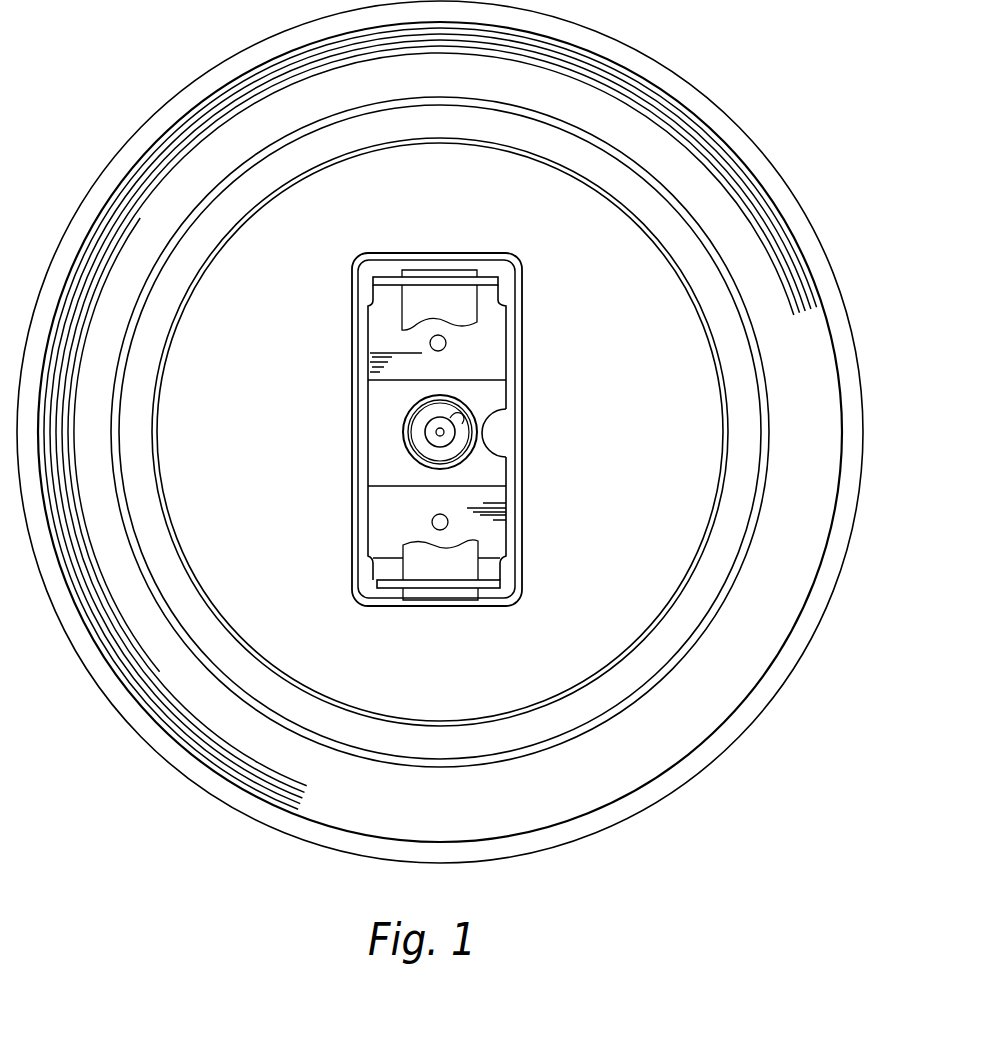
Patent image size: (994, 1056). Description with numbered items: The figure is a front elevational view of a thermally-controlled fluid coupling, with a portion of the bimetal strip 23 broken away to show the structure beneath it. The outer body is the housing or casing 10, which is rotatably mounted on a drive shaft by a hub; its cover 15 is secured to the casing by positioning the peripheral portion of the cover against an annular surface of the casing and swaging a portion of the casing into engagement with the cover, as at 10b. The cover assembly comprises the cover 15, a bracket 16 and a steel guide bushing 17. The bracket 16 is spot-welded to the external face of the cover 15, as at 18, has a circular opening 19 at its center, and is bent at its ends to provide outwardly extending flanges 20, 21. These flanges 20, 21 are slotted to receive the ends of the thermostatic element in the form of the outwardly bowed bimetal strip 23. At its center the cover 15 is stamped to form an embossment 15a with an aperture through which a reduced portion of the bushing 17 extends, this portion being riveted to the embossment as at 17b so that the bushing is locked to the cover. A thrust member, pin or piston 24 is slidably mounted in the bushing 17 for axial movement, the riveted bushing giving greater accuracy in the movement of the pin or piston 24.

The housing or casing 10 is at (670, 68).
The swaged portion of casing 10b is at (720, 250).
The cover 15 is at (580, 677).
The embossment 15a is at (420, 428).
The bracket 16 is at (493, 362).
The steel guide bushing 17 is at (458, 448).
The riveted portion of bushing 17b is at (433, 422).
The spot weld 18 is at (447, 339).
The circular opening 19 is at (458, 418).
The flange 20 is at (486, 276).
The flange 21 is at (492, 586).
The bimetal strip 23 is at (423, 300).
The thrust member, pin or piston 24 is at (438, 436).